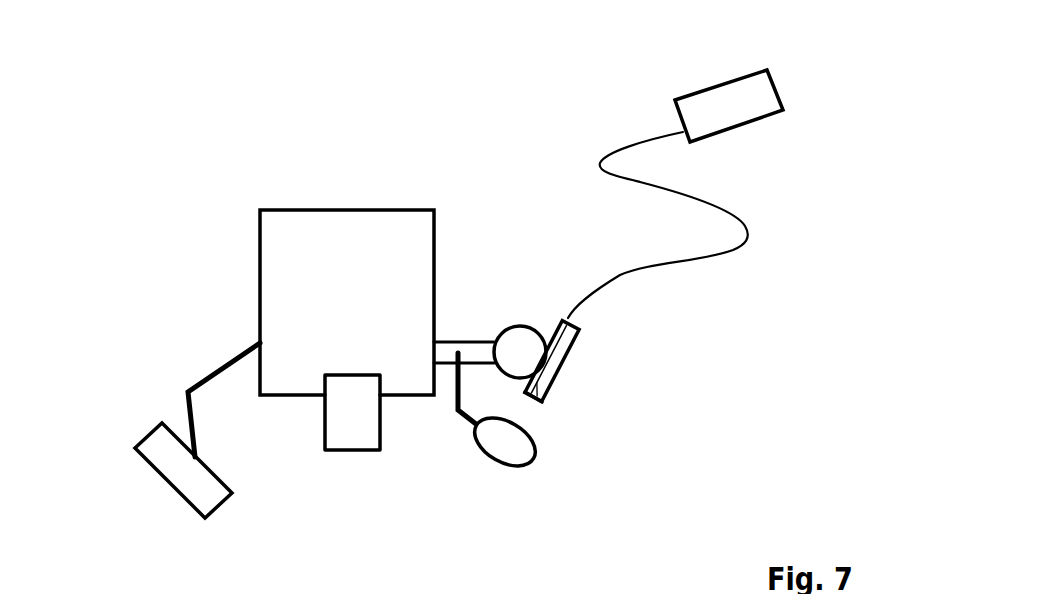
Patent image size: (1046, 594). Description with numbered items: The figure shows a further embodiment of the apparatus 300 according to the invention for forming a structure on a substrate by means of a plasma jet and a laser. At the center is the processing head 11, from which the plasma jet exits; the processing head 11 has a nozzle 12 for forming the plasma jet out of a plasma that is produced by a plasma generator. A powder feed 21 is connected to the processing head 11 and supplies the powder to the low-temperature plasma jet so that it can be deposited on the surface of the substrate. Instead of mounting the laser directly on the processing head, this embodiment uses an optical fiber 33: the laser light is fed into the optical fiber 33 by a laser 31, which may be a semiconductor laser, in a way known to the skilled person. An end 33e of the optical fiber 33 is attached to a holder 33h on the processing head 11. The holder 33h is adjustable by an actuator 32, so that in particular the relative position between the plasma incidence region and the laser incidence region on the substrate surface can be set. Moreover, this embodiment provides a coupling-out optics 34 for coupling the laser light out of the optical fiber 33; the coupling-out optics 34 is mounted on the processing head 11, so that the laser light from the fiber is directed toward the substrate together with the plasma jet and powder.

The apparatus 300 is at (445, 150).
The processing head 11 is at (360, 303).
The nozzle 12 is at (358, 451).
The powder feed 21 is at (157, 470).
The laser 31 is at (757, 123).
The actuator 32 is at (512, 326).
The optical fiber 33 is at (733, 255).
The holder 33h is at (574, 347).
The end of the optical fiber 33e is at (547, 401).
The coupling-out optics 34 is at (525, 457).